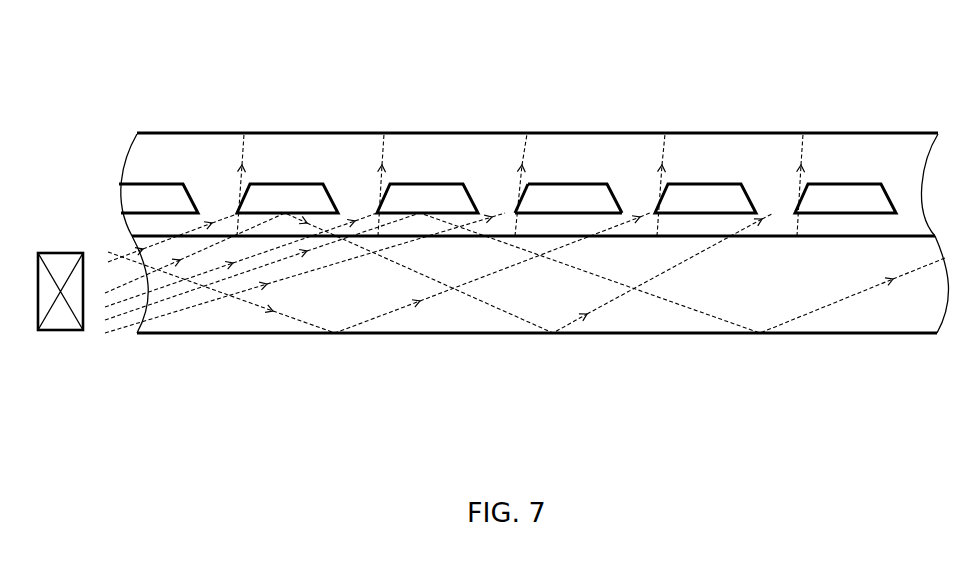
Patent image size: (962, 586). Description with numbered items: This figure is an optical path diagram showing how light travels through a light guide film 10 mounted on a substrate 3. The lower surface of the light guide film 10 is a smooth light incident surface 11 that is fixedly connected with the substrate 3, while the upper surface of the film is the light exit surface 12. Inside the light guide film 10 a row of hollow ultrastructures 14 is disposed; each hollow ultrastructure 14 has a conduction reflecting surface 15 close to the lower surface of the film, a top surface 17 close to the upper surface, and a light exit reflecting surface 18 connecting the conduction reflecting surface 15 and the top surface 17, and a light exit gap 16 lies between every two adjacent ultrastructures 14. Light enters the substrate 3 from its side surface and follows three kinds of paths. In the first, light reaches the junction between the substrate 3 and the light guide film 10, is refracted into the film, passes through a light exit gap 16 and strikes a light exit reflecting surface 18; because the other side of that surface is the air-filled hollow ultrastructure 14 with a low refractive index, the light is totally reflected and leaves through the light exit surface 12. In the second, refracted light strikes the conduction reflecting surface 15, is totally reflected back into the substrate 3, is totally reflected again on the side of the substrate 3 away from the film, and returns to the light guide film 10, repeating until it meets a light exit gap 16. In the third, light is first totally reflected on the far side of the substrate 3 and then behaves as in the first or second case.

The substrate 3 is at (226, 320).
The light guide film 10 is at (204, 147).
The light incident surface 11 is at (668, 238).
The light exit surface 12 is at (330, 132).
The hollow ultrastructure 14 is at (302, 197).
The conduction reflecting surface 15 is at (540, 216).
The light exit gap 16 is at (503, 212).
The top surface 17 is at (575, 183).
The light exit reflecting surface 18 is at (522, 197).